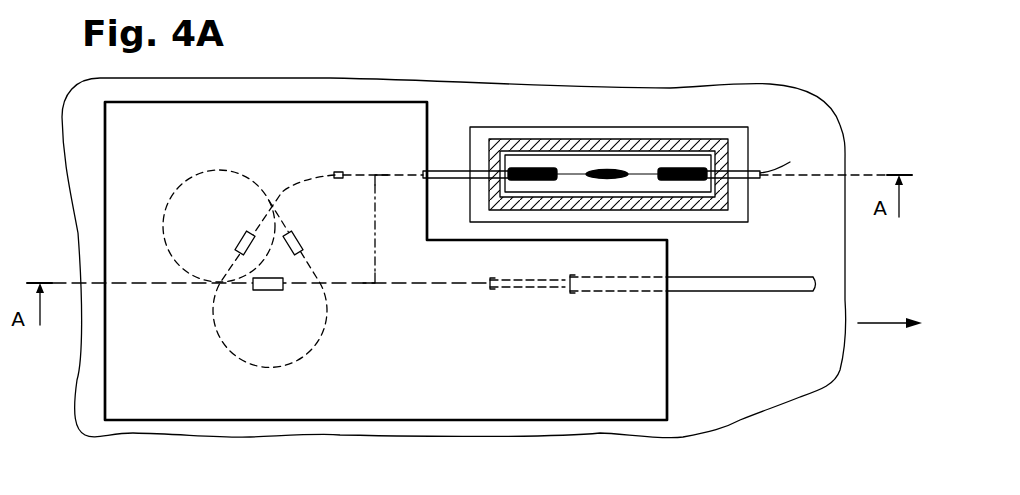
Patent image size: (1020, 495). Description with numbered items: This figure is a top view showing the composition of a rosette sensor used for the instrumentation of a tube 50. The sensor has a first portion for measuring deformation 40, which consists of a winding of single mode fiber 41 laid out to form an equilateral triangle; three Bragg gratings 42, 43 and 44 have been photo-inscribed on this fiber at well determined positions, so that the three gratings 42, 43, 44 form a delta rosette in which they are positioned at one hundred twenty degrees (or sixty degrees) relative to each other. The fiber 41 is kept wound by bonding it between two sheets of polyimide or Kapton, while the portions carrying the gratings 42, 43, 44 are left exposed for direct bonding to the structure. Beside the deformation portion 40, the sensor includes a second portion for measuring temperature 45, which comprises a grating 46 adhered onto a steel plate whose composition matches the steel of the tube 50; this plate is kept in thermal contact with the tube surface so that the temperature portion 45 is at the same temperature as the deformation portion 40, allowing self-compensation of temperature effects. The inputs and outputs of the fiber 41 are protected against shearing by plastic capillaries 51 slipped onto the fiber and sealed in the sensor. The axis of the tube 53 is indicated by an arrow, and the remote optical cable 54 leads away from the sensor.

The first portion for measuring deformation 40 is at (231, 239).
The single mode fiber 41 is at (229, 172).
The Bragg grating 42 is at (238, 240).
The Bragg grating 43 is at (296, 232).
The Bragg grating 44 is at (267, 291).
The second portion for measuring temperature 45 is at (695, 118).
The grating 46 is at (607, 169).
The tube 50 is at (787, 123).
The plastic capillaries 51 is at (447, 171).
The axis of the tube 53 is at (880, 322).
The remote optical cable 54 is at (738, 284).